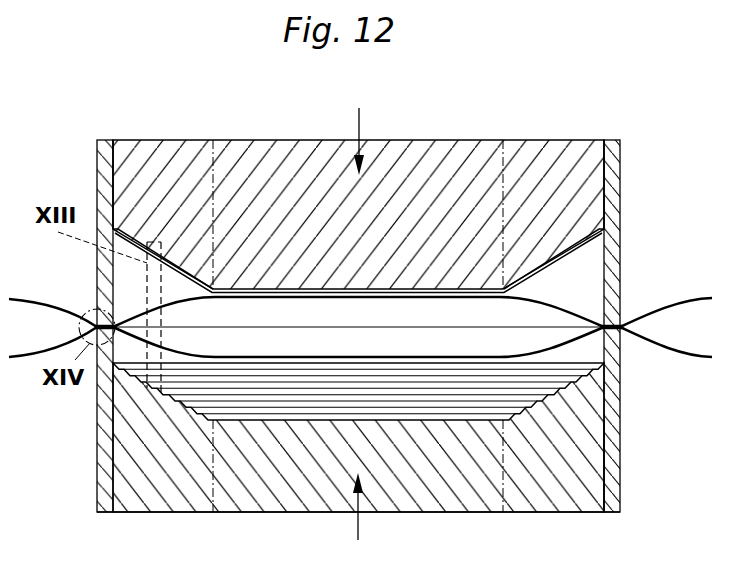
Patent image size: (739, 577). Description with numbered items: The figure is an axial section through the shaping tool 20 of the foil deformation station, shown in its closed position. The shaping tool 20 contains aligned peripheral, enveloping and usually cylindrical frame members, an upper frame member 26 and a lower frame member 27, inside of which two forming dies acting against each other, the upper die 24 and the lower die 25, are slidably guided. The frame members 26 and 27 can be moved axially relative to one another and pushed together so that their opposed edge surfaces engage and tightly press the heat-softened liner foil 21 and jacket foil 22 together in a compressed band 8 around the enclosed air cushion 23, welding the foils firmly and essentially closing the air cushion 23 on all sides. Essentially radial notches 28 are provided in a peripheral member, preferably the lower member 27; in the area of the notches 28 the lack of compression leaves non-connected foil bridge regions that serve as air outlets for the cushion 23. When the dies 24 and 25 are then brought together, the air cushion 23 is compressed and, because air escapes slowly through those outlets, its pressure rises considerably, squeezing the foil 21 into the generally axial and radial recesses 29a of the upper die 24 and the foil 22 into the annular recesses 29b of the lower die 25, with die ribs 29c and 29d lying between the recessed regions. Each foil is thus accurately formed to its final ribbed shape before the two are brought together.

The band 8 is at (88, 312).
The shaping tool 20 is at (628, 193).
The liner foil 21 is at (29, 298).
The jacket foil 22 is at (24, 365).
The air cushion 23 is at (437, 345).
The upper forming die 24 is at (418, 180).
The lower forming die 25 is at (283, 487).
The upper frame member 26 is at (608, 170).
The lower frame member 27 is at (608, 468).
The radial notches 28 is at (613, 334).
The axial and radial recesses 29a is at (180, 262).
The annular recesses 29b is at (178, 405).
The ribs of upper die 29c is at (197, 277).
The ribs of lower die 29d is at (166, 398).